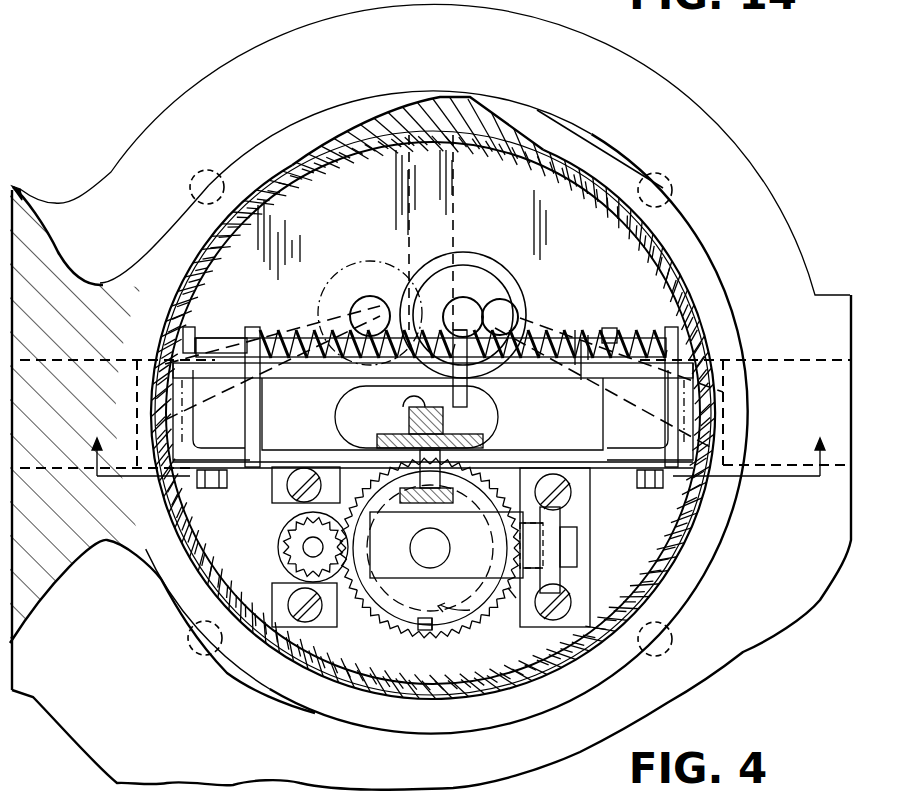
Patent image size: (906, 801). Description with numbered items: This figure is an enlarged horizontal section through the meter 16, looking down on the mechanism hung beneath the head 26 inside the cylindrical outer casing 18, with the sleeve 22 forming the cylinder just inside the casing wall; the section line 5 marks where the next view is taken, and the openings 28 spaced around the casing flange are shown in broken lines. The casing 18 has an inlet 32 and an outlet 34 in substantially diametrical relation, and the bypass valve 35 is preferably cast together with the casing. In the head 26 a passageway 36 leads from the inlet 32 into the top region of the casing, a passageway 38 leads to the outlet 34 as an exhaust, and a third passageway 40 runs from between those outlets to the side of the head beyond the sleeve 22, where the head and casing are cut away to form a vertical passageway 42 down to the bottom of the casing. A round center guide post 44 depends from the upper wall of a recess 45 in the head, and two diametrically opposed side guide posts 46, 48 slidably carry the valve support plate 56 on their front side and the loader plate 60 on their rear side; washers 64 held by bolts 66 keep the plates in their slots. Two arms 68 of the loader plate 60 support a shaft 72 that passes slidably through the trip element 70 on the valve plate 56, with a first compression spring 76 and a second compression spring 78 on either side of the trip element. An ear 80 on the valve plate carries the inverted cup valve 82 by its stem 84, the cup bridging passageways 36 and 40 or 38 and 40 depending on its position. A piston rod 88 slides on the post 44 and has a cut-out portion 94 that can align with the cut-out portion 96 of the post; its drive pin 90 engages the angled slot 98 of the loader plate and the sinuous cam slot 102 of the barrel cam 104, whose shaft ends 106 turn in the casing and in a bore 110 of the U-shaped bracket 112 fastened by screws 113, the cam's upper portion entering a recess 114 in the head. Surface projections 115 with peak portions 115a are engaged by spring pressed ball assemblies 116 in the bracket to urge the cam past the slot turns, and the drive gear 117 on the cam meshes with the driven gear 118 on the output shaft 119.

The section line 5- 5 is at (435, 418).
The meter 16 is at (300, 146).
The outer casing 18 is at (600, 150).
The sleeve 22 is at (655, 237).
The head 26 is at (423, 257).
The bolt holes 28 is at (192, 170).
The inlet 32 is at (82, 355).
The outlet 34 is at (810, 360).
The bypass valve 35 is at (25, 205).
The passageway 36 is at (323, 311).
The passageway 38 is at (537, 302).
The third passageway 40 is at (457, 268).
The vertical passageway 42 is at (463, 117).
The center guide post 44 is at (411, 419).
The recess 45 is at (416, 417).
The guide post 46 is at (211, 411).
The guide post 48 is at (650, 411).
The valve support plate 56 is at (260, 372).
The loader plate 60 is at (568, 452).
The washers 64 is at (235, 356).
The bolts 66 is at (224, 491).
The arms 68 is at (251, 328).
The trip element 70 is at (482, 310).
The shaft 72 is at (205, 338).
The first compression spring 76 is at (318, 333).
The second compression spring 78 is at (610, 330).
The ear 80 is at (463, 282).
The cup valve 82 is at (528, 292).
The stem 84 is at (470, 300).
The piston rod 88 is at (455, 420).
The drive pin 90 is at (443, 488).
The cut-out portion 94 is at (475, 402).
The cut-out portion 96 is at (417, 402).
The angled slot 98 is at (412, 490).
The cam slot 102 is at (482, 455).
The barrel cam 104 is at (407, 580).
The shaft ends 106 is at (444, 548).
The bore 110 is at (428, 585).
The U-shaped bracket 112 is at (385, 570).
The screws 113 is at (291, 467).
The recess 114 is at (503, 598).
The surface projections 115 is at (433, 631).
The peak portions 115a is at (425, 630).
The spring pressed ball assemblies 116 is at (577, 543).
The drive gear 117 is at (511, 598).
The driven gear 118 is at (288, 543).
The output shaft 119 is at (311, 548).